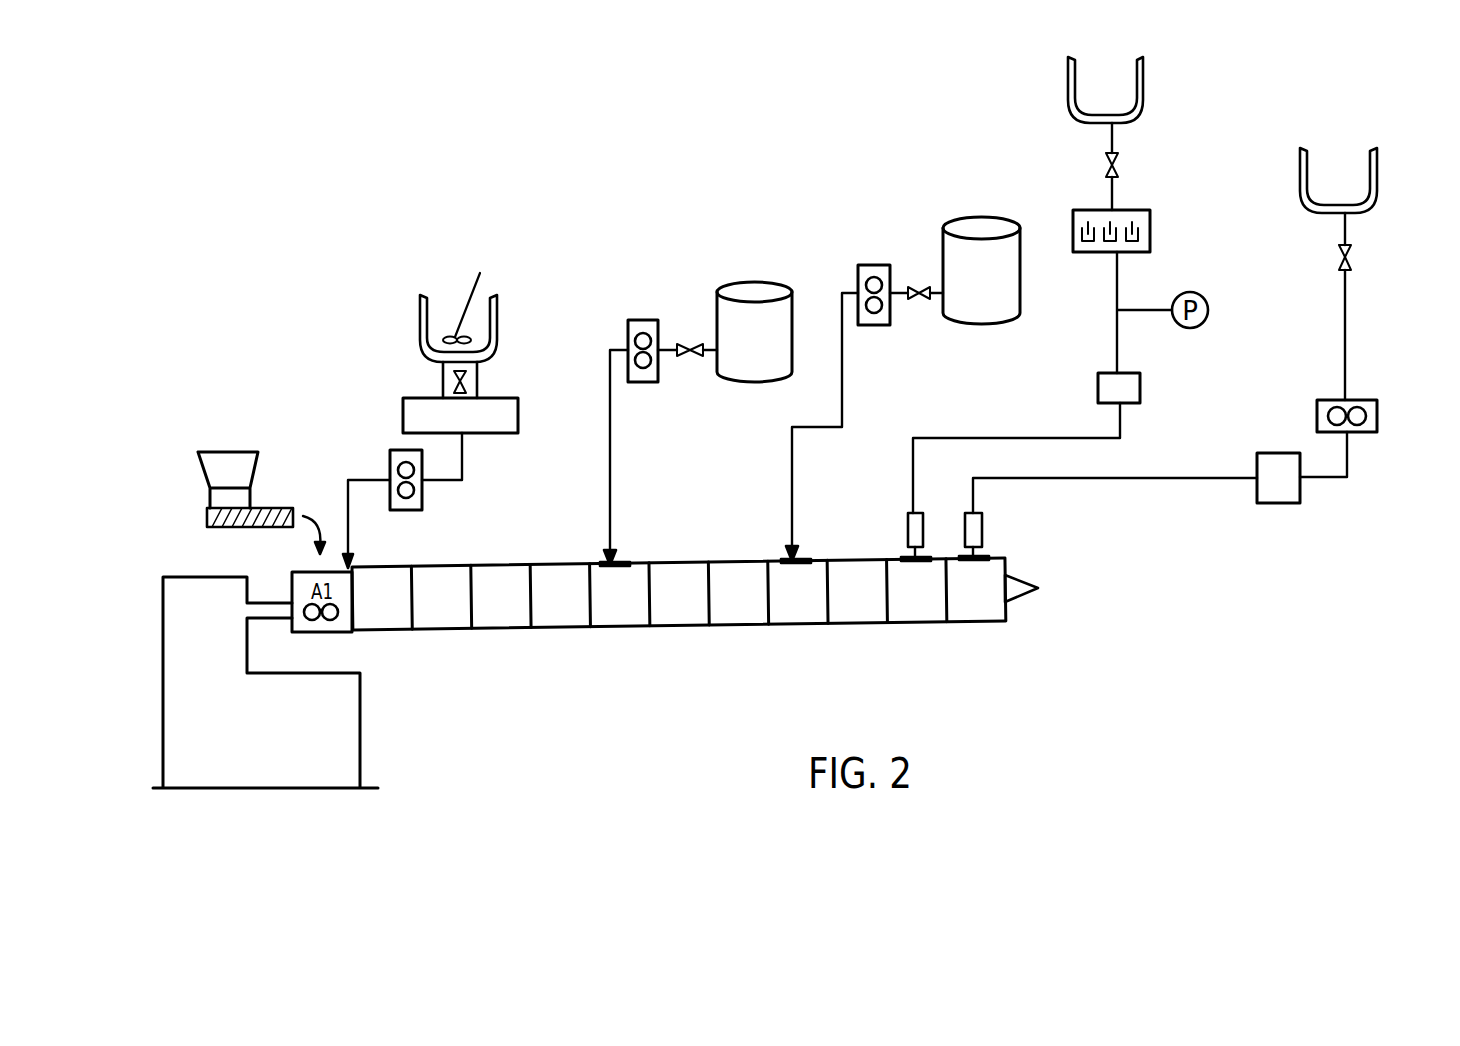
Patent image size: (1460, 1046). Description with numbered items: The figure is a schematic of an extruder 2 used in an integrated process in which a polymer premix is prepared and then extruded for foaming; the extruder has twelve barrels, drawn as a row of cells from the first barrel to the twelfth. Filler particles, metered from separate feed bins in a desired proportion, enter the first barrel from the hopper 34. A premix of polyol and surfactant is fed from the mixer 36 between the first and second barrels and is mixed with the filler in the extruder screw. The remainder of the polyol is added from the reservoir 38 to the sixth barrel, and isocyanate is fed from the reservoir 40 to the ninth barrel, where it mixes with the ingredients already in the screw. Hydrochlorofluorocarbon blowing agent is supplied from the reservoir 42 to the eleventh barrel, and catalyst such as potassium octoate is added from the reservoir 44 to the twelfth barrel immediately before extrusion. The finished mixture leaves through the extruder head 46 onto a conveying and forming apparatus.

The extruder 2 is at (666, 548).
The hopper 34 is at (207, 505).
The mixer 36 is at (497, 320).
The reservoir 38 is at (758, 295).
The reservoir 40 is at (983, 228).
The reservoir 42 is at (1145, 86).
The reservoir 44 is at (1377, 180).
The extruder head 46 is at (1037, 588).